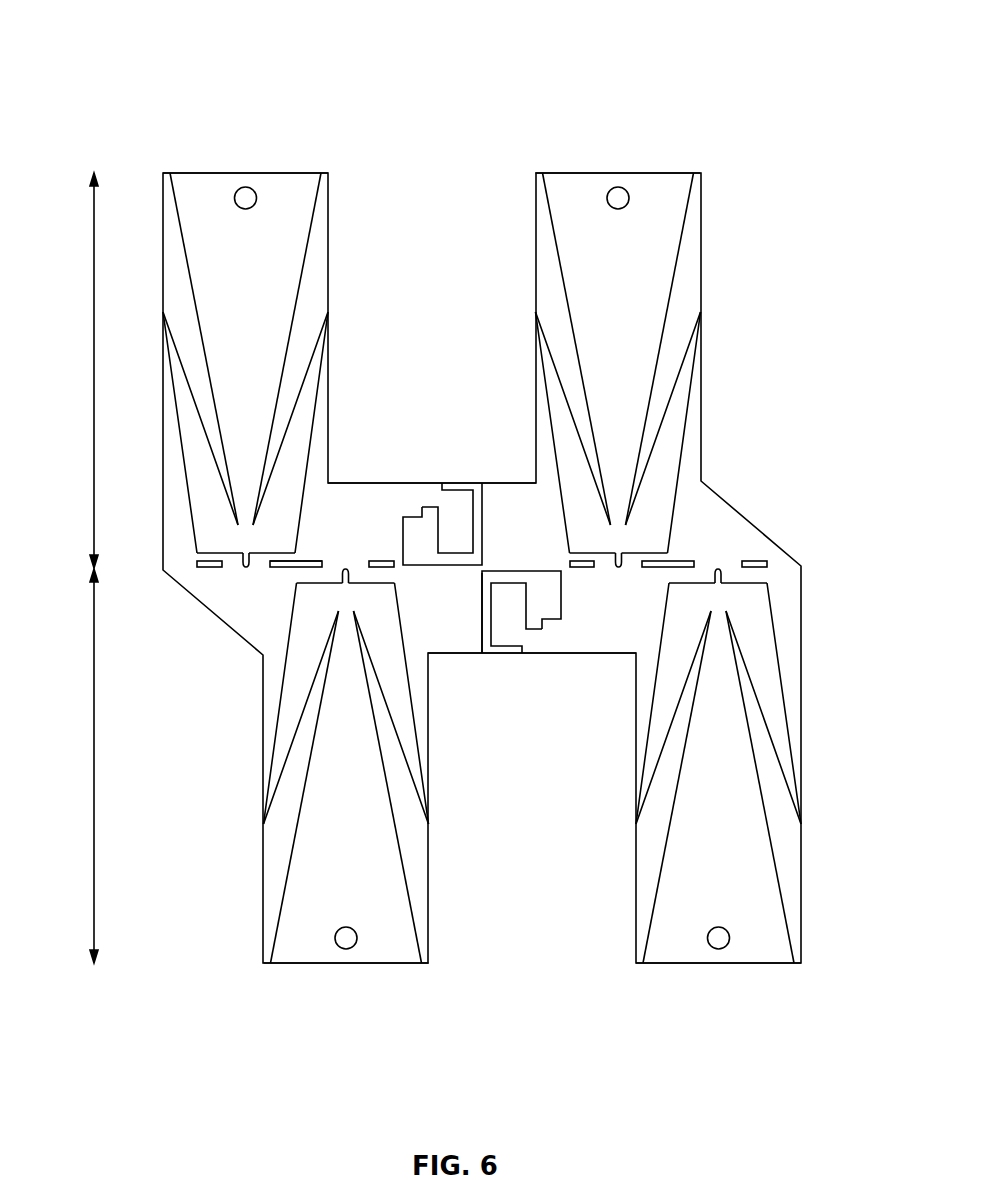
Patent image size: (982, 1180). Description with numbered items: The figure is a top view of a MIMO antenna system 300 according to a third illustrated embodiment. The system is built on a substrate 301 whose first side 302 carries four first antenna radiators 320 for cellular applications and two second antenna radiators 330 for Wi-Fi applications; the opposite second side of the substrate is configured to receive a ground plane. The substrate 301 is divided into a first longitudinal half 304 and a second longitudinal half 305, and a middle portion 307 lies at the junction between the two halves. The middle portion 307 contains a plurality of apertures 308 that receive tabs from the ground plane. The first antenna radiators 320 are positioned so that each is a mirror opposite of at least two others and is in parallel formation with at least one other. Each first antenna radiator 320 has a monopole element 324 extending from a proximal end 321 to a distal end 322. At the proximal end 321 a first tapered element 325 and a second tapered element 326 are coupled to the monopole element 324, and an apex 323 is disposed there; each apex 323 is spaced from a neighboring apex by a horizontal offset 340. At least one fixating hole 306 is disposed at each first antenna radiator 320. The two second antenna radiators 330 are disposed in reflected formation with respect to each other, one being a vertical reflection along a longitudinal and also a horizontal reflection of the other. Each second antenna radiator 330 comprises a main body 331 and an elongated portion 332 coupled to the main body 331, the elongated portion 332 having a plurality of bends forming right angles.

The MIMO antenna system 300 is at (162, 45).
The substrate 301 is at (560, 651).
The first side 302 is at (338, 481).
The first longitudinal half 304 is at (92, 365).
The second longitudinal half 305 is at (92, 748).
The fixating hole 306 is at (246, 186).
The middle portion 307 is at (180, 567).
The aperture 308 is at (287, 573).
The first antenna radiator 320 is at (303, 226).
The proximal end 321 is at (225, 552).
The distal end 322 is at (300, 172).
The apex 323 is at (345, 573).
The monopole element 324 is at (198, 232).
The first tapered element 325 is at (197, 427).
The second tapered element 326 is at (310, 385).
The second antenna radiator 330 is at (490, 657).
The main body 331 is at (410, 522).
The elongated portion 332 is at (455, 482).
The horizontal offset 340 is at (298, 561).